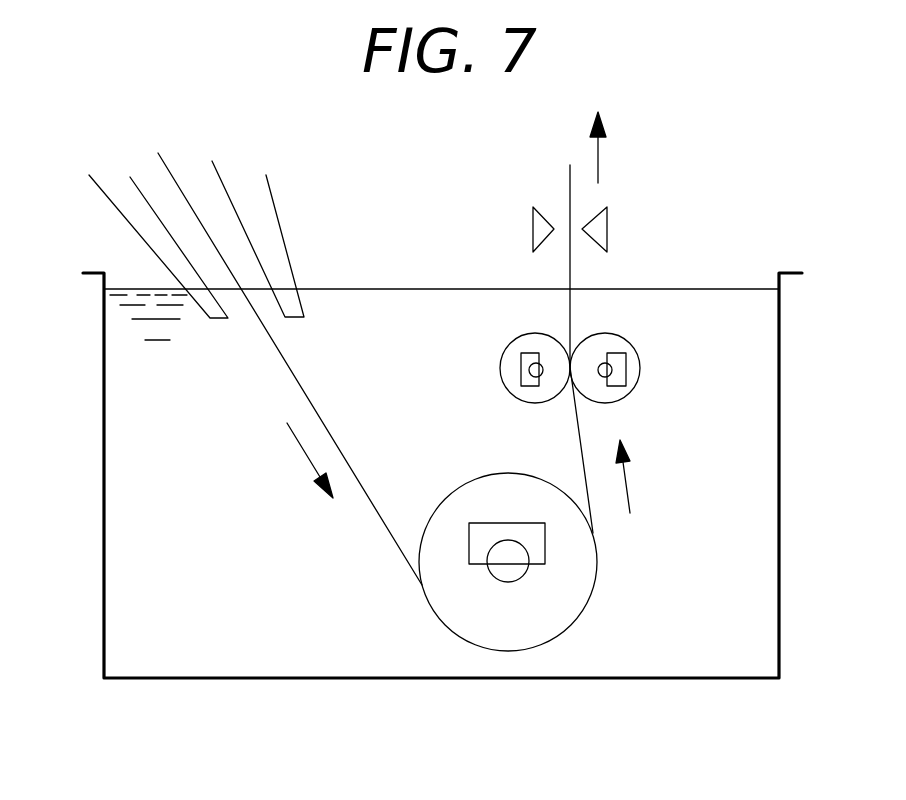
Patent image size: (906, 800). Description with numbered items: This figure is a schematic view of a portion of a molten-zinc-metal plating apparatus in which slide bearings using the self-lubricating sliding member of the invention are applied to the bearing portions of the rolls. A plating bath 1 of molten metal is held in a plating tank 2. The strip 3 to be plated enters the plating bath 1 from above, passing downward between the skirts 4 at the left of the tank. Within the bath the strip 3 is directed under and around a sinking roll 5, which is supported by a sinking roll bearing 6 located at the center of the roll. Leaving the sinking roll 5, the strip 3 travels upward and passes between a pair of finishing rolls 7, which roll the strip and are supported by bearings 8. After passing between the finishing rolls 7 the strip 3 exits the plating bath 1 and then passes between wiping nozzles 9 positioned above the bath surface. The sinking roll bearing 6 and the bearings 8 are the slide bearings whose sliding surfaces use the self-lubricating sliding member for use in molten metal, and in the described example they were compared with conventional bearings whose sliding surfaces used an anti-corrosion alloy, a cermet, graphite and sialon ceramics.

The plating bath 1 is at (707, 650).
The plating tank 2 is at (197, 680).
The strip 3 is at (187, 198).
The skirts 4 is at (125, 206).
The sinking roll 5 is at (558, 622).
The sinking roll bearing 6 is at (482, 553).
The finishing rolls 7 is at (528, 342).
The bearings 8 is at (520, 370).
The wiping nozzles 9 is at (543, 215).